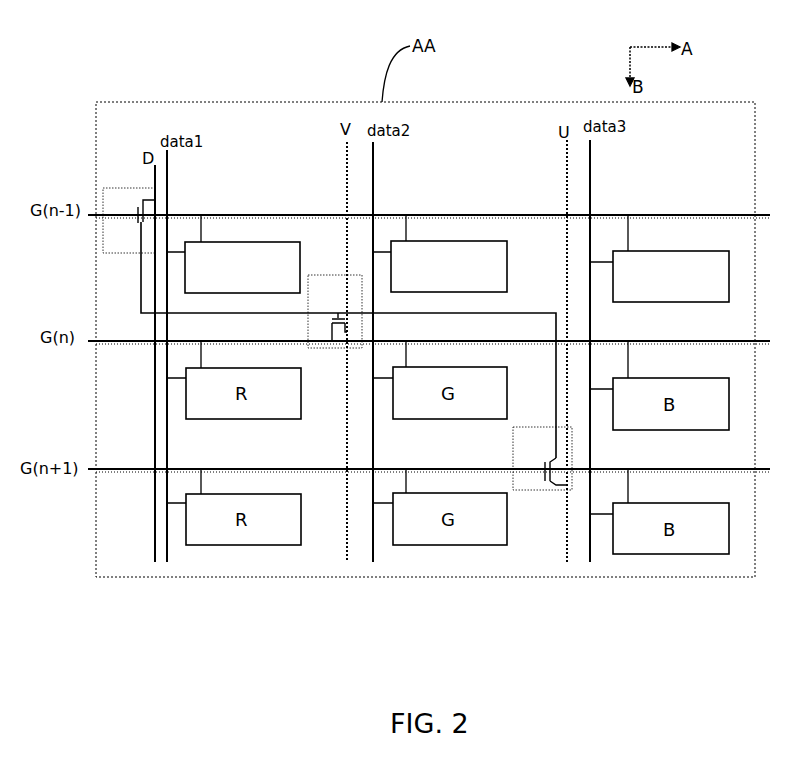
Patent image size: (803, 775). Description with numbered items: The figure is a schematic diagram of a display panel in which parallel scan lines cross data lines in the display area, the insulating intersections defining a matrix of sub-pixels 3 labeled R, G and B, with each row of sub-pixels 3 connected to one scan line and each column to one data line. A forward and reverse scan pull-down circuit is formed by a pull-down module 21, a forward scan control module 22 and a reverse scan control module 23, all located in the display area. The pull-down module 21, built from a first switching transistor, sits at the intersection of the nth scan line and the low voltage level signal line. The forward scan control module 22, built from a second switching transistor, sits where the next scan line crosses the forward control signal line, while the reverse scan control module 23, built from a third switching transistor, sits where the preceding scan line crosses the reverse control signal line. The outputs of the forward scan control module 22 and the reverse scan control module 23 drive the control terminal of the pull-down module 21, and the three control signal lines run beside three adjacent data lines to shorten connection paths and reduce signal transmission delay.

The sub-pixel 3 is at (260, 242).
The pull-down module 21 is at (336, 275).
The forward scan control module 22 is at (557, 490).
The reverse scan control module 23 is at (127, 188).